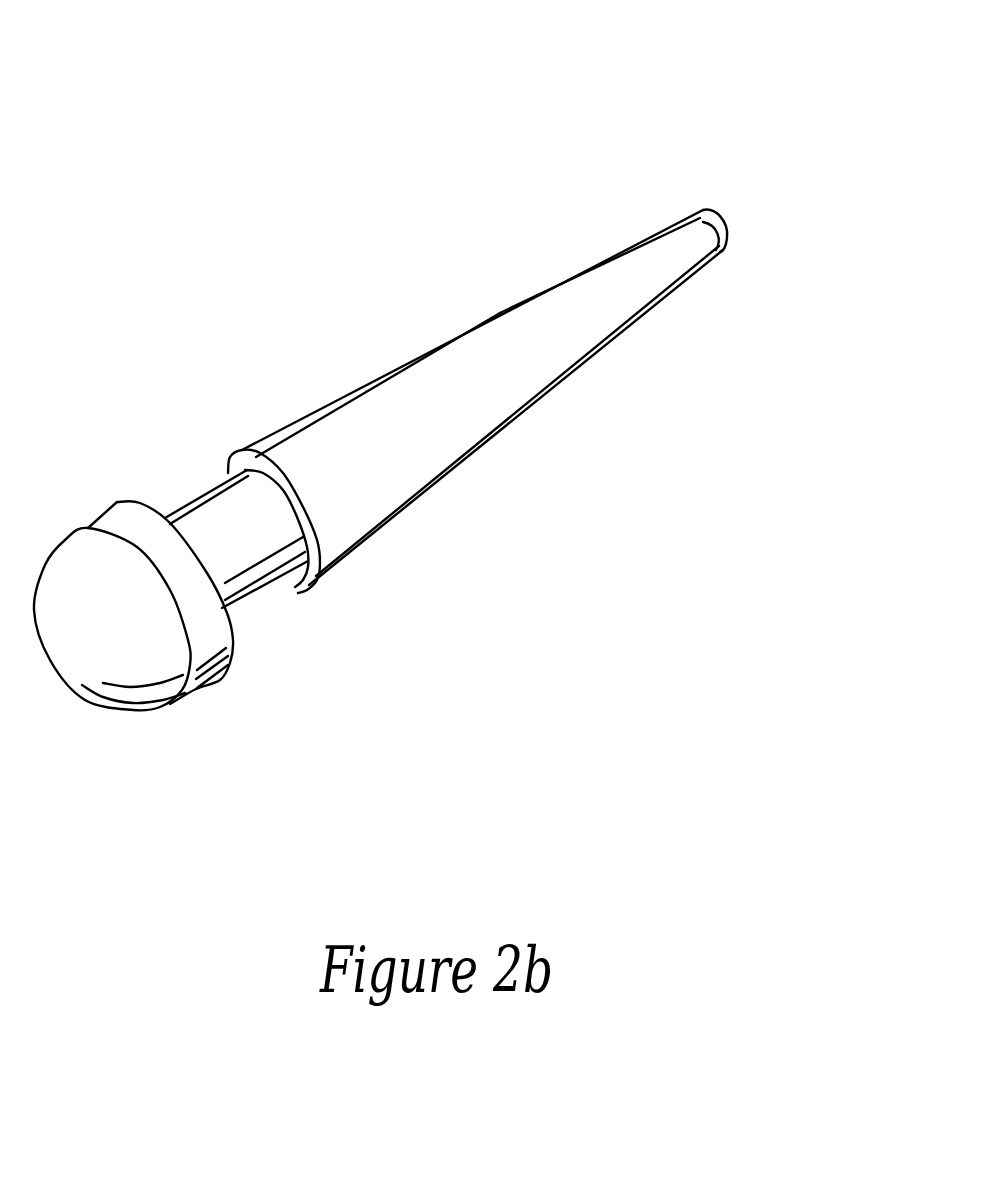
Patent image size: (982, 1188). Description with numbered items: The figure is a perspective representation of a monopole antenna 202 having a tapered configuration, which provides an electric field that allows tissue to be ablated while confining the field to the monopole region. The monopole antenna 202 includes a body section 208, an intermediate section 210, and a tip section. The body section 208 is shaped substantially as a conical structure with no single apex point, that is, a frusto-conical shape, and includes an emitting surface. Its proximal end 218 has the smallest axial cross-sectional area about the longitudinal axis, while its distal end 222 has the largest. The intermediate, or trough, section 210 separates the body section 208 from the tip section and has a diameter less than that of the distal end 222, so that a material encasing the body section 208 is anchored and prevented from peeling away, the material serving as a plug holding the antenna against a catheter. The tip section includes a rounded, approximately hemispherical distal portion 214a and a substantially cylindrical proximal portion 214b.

The monopole antenna 202 is at (743, 145).
The body section 208 is at (533, 392).
The intermediate section 210 is at (196, 502).
The distal portion 214a is at (118, 712).
The proximal portion 214b is at (212, 678).
The proximal end 218 is at (706, 227).
The distal end 222 is at (303, 580).